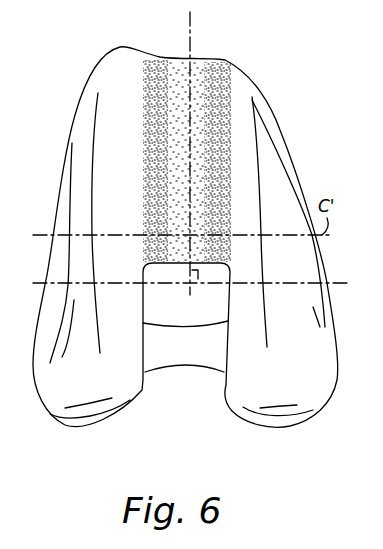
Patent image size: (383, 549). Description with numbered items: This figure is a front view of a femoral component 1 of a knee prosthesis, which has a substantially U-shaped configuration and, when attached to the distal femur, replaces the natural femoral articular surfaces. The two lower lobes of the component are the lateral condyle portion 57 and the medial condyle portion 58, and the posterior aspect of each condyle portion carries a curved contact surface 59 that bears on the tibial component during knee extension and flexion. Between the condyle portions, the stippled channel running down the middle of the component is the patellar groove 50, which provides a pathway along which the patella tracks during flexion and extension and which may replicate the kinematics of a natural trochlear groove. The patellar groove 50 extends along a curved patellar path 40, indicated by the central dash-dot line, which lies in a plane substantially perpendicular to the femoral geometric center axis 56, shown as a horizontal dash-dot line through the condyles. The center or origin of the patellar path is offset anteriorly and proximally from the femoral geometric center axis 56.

The femoral component 1 is at (258, 80).
The curved patellar path 40 is at (188, 33).
The patellar groove 50 is at (216, 79).
The femoral geometric center axis 56 is at (336, 283).
The lateral condyle portion 57 is at (292, 412).
The medial condyle portion 58 is at (75, 413).
The curved contact surface 59 is at (93, 420).